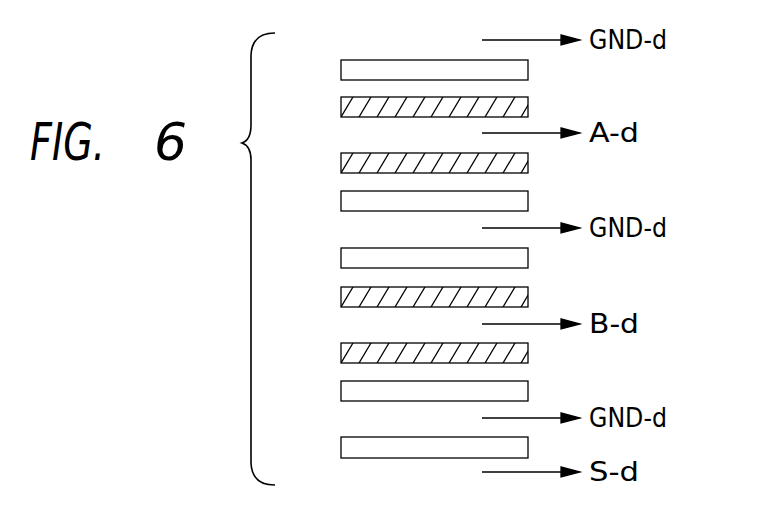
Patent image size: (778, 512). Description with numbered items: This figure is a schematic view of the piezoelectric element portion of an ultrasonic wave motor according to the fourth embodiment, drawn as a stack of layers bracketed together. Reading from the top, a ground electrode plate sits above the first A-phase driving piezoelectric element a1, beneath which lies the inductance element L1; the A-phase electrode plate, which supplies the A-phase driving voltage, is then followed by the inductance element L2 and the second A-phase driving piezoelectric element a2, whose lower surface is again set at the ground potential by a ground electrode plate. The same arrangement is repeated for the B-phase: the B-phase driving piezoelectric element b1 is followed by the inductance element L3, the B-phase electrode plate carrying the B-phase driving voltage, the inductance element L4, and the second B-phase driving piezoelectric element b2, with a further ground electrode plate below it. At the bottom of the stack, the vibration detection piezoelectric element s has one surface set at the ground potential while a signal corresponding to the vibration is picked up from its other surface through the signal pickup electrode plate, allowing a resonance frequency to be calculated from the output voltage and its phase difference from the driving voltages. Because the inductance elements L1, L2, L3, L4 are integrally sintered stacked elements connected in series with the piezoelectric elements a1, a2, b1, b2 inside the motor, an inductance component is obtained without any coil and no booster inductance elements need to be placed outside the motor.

The A-phase driving piezoelectric element a1 is at (415, 71).
The inductance element L1 is at (426, 107).
The inductance element L2 is at (427, 164).
The A-phase driving piezoelectric element a2 is at (415, 201).
The B-phase driving piezoelectric element b1 is at (417, 259).
The inductance element L3 is at (427, 298).
The inductance element L4 is at (427, 354).
The B-phase driving piezoelectric element b2 is at (416, 391).
The vibration detection piezoelectric element s is at (422, 449).